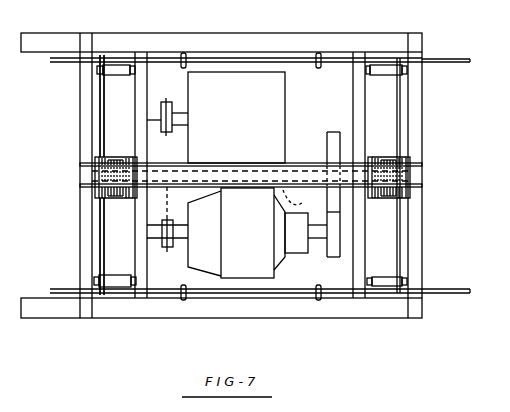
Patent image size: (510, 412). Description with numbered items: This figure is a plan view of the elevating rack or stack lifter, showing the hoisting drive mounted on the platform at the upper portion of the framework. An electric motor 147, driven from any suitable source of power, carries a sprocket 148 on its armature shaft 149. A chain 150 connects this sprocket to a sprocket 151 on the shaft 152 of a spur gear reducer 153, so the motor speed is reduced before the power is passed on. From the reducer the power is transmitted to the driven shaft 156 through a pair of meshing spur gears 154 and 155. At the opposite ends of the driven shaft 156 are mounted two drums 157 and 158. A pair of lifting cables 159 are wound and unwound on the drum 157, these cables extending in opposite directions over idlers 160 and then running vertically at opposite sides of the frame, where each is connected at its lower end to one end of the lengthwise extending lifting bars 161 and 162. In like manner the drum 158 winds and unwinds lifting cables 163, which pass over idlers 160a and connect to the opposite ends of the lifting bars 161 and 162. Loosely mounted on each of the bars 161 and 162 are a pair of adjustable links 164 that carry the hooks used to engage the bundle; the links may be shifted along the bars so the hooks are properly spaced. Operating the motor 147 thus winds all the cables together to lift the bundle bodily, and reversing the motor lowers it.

The electric motor 147 is at (236, 117).
The sprocket 148 is at (160, 118).
The armature shaft 149 is at (177, 114).
The chain 150 is at (113, 106).
The sprocket 151 is at (104, 258).
The shaft 152 is at (177, 240).
The spur gear reducer 153 is at (236, 233).
The spur gear 154 is at (329, 249).
The spur gear 155 is at (333, 132).
The driven shaft 156 is at (300, 199).
The drum 157 is at (406, 158).
The drum 158 is at (95, 157).
The lifting cables 159 is at (401, 99).
The idlers 160 is at (378, 66).
The idlers 160a is at (114, 67).
The lifting bar 161 is at (456, 294).
The lifting bar 162 is at (455, 59).
The lifting cables 163 is at (102, 122).
The adjustable links 164 is at (183, 53).